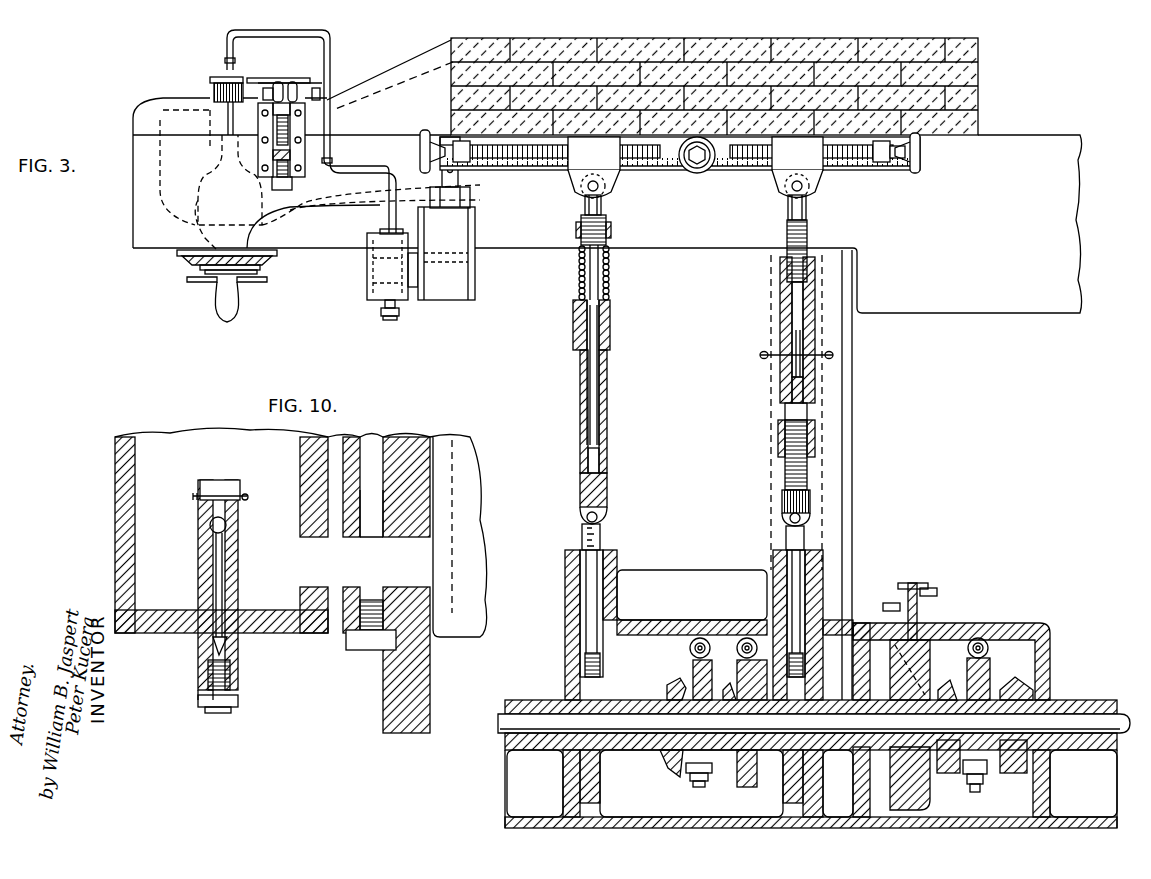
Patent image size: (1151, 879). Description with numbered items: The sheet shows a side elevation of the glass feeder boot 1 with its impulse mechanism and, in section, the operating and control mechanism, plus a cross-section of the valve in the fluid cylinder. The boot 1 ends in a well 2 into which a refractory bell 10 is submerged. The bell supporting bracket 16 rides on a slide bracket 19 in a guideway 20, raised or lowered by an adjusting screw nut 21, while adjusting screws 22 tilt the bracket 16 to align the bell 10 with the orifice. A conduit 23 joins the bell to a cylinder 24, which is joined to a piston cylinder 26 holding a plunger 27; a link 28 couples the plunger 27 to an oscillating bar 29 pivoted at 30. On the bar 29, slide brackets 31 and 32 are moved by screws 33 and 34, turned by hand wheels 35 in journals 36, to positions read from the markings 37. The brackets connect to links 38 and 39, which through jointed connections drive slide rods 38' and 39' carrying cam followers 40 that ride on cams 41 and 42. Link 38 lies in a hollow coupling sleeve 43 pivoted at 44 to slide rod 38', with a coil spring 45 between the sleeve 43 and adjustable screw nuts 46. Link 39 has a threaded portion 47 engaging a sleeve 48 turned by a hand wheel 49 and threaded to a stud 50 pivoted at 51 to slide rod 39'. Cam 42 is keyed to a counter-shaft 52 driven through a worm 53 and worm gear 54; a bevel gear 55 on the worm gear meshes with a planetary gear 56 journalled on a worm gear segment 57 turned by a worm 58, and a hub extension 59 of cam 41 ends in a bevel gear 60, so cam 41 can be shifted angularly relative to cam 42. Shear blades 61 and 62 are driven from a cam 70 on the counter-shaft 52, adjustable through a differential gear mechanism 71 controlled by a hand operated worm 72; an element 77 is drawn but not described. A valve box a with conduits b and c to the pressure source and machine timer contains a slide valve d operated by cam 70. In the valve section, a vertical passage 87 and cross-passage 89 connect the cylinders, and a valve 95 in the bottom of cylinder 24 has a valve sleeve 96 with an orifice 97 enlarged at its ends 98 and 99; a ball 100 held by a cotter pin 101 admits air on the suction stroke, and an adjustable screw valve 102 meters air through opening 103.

In FIG. 3, the boot 1 is at (305, 248).
In FIG. 3, the well 2 is at (210, 258).
In FIG. 3, the bell 10 is at (210, 200).
In FIG. 3, the bell supporting bracket 16 is at (238, 83).
In FIG. 3, the slide bracket 19 is at (305, 103).
In FIG. 3, the guideway 20 is at (305, 125).
In FIG. 3, the adjusting screw nut 21 is at (295, 155).
In FIG. 3, the adjusting screws 22 is at (320, 95).
In FIG. 3, the conduit 23 is at (283, 36).
In FIG. 3, the cylinder 24 is at (367, 263).
In FIG. 10, the cylinder 24 is at (115, 492).
In FIG. 3, the piston cylinder 26 is at (475, 270).
In FIG. 10, the piston cylinder 26 is at (400, 700).
In FIG. 3, the plunger 27 is at (458, 185).
In FIG. 10, the plunger 27 is at (470, 637).
In FIG. 3, the link 28 is at (460, 172).
In FIG. 3, the oscillating bar 29 is at (548, 172).
In FIG. 3, the pivot 30 is at (697, 173).
In FIG. 3, the slide bracket 31 is at (611, 180).
In FIG. 3, the slide bracket 32 is at (820, 180).
In FIG. 3, the screw 33 is at (645, 158).
In FIG. 3, the screw 34 is at (858, 158).
In FIG. 3, the hand wheels 35 is at (920, 165).
In FIG. 3, the journals 36 is at (885, 162).
In FIG. 3, the markings 37 is at (745, 170).
In FIG. 3, the link 38 is at (572, 241).
In FIG. 3, the slide rod 38' is at (618, 534).
In FIG. 3, the link 39 is at (820, 238).
In FIG. 3, the slide rod 39' is at (760, 539).
In FIG. 3, the cam followers 40 is at (600, 662).
In FIG. 3, the cam 41 is at (600, 780).
In FIG. 3, the cam 42 is at (783, 790).
In FIG. 3, the hollow coupling sleeve 43 is at (607, 367).
In FIG. 3, the pivot 44 is at (600, 493).
In FIG. 3, the coil spring 45 is at (608, 280).
In FIG. 3, the adjustable screw nuts 46 is at (608, 228).
In FIG. 3, the threaded portion 47 is at (780, 272).
In FIG. 3, the sleeve 48 is at (780, 322).
In FIG. 3, the hand wheel 49 is at (760, 358).
In FIG. 3, the stud 50 is at (808, 468).
In FIG. 3, the pivot 51 is at (812, 513).
In FIG. 3, the counter-shaft 52 is at (498, 725).
In FIG. 3, the worm 53 is at (735, 640).
In FIG. 3, the worm gear 54 is at (737, 780).
In FIG. 3, the bevel gear 55 is at (738, 680).
In FIG. 3, the planetary gear 56 is at (688, 775).
In FIG. 3, the worm gear segment 57 is at (693, 672).
In FIG. 3, the worm 58 is at (695, 638).
In FIG. 3, the hub extension 59 is at (667, 682).
In FIG. 3, the bevel gear 60 is at (668, 755).
In FIG. 3, the cutting blade 61 is at (240, 282).
In FIG. 3, the cutting blade 62 is at (205, 282).
In FIG. 3, the cam 70 is at (930, 795).
In FIG. 3, the differential gear mechanism 71 is at (1030, 690).
In FIG. 3, the hand operated worm 72 is at (985, 640).
In FIG. 3, the plate 77 is at (955, 623).
In FIG. 10, the vertical passage 87 is at (383, 520).
In FIG. 10, the cross-passage 89 is at (330, 595).
In FIG. 10, the valve 95 is at (235, 668).
In FIG. 3, the valve sleeve 96 is at (396, 305).
In FIG. 10, the valve sleeve 96 is at (238, 558).
In FIG. 10, the orifice 97 is at (222, 592).
In FIG. 10, the enlarged end 98 is at (228, 483).
In FIG. 10, the enlarged end 99 is at (198, 655).
In FIG. 10, the ball 100 is at (226, 525).
In FIG. 10, the cotter pin 101 is at (250, 497).
In FIG. 3, the adjustable screw valve 102 is at (392, 320).
In FIG. 10, the adjustable screw valve 102 is at (220, 713).
In FIG. 10, the opening 103 is at (227, 645).
In FIG. 3, the valve box a is at (920, 583).
In FIG. 3, the conduit b is at (937, 590).
In FIG. 3, the conduit c is at (890, 603).
In FIG. 3, the slide valve d is at (910, 583).